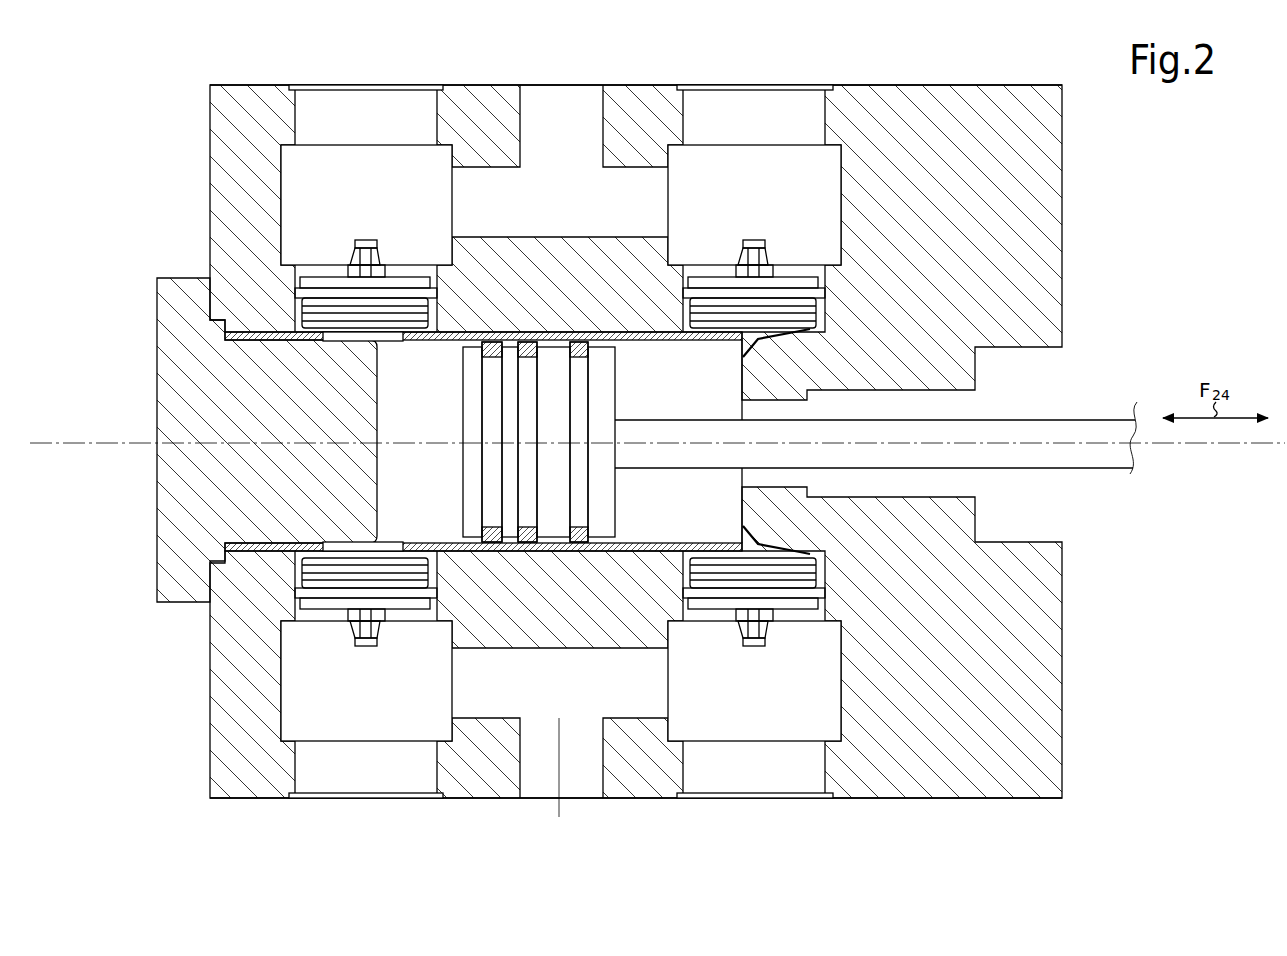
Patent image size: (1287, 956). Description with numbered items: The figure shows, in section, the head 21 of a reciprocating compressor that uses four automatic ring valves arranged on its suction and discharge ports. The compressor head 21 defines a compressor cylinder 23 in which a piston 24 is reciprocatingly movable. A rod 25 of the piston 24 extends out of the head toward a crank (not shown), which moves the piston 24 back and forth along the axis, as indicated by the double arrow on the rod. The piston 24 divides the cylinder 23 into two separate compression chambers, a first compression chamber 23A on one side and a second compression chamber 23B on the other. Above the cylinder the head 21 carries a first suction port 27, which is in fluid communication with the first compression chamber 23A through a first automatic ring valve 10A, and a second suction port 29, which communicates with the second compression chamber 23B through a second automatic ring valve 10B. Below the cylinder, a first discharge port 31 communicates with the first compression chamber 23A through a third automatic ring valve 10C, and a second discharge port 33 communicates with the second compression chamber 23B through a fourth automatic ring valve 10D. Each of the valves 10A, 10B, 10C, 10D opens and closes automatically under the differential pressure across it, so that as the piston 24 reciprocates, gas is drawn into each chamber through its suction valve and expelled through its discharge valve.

The compressor head 21 is at (185, 770).
The compressor cylinder 23 is at (645, 360).
The first compression chamber 23A is at (442, 404).
The second compression chamber 23B is at (710, 527).
The piston 24 is at (470, 500).
The rod 25 is at (683, 432).
The first suction port 27 is at (337, 200).
The second suction port 29 is at (721, 200).
The first discharge port 31 is at (337, 715).
The second discharge port 33 is at (722, 715).
The first automatic ring valve 10A is at (404, 268).
The second automatic ring valve 10B is at (792, 268).
The third automatic ring valve 10C is at (411, 621).
The fourth automatic ring valve 10D is at (806, 621).